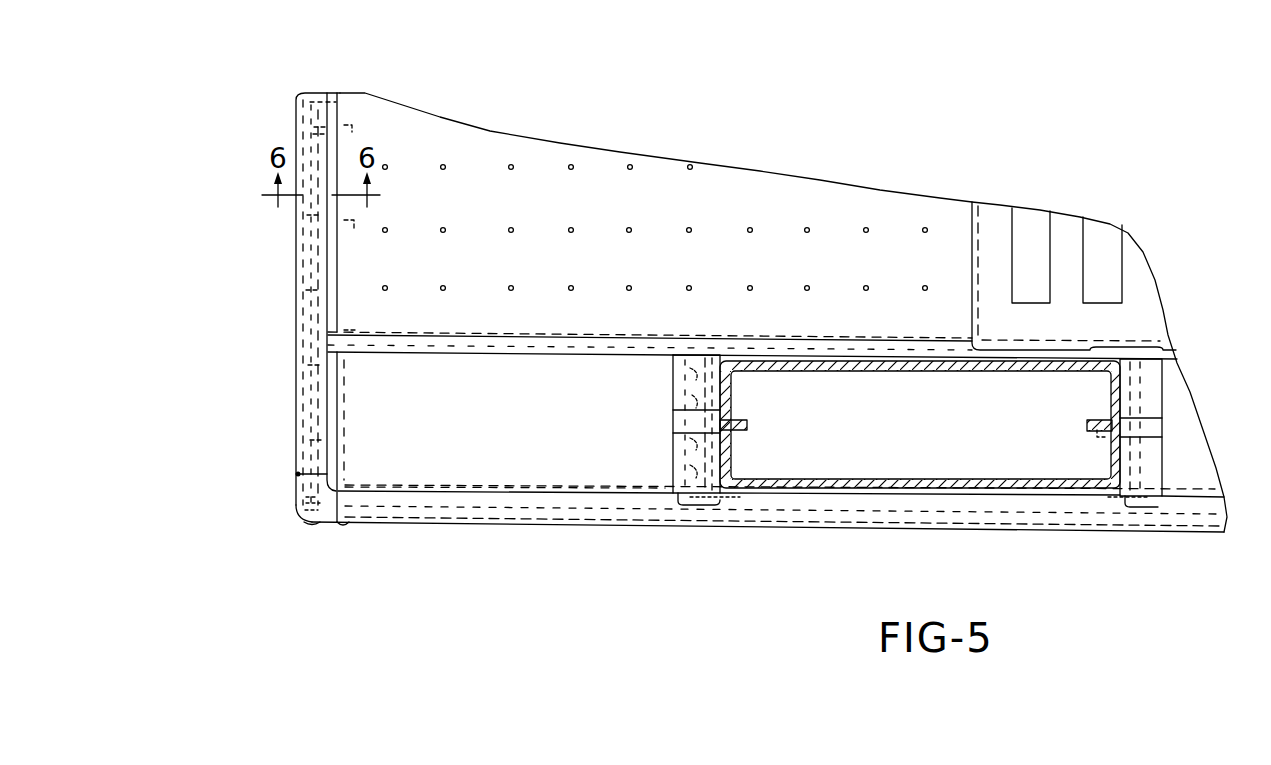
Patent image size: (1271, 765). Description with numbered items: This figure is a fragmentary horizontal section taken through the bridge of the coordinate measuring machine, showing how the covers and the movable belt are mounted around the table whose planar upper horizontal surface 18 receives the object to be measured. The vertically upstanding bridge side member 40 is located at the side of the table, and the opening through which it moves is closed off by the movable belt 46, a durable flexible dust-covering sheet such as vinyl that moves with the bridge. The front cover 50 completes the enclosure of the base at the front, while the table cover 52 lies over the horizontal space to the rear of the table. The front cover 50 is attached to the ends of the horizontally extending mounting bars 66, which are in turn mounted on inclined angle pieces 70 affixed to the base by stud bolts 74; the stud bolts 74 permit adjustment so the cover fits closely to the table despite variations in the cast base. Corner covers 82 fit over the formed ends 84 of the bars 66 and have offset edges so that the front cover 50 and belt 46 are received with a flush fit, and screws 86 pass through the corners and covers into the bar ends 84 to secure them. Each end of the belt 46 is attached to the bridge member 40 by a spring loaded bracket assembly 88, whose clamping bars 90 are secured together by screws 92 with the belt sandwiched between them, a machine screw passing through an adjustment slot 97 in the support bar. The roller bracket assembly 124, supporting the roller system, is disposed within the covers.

The planar upper horizontal surface 18 is at (648, 211).
The bridge side member 40 is at (847, 488).
The movable belt 46 is at (506, 458).
The front cover 50 is at (297, 95).
The table cover 52 is at (1054, 306).
The mounting bar 66 is at (300, 367).
The inclined angle piece 70 is at (312, 257).
The stud bolt 74 is at (320, 122).
The corner cover 82 is at (300, 521).
The formed end 84 is at (322, 515).
The screw 86 is at (298, 474).
The spring loaded bracket assembly 88 is at (696, 501).
The clamping bar 90 is at (708, 352).
The screw 92 is at (693, 360).
The adjustment slot 97 is at (720, 421).
The roller bracket assembly 124 is at (352, 420).